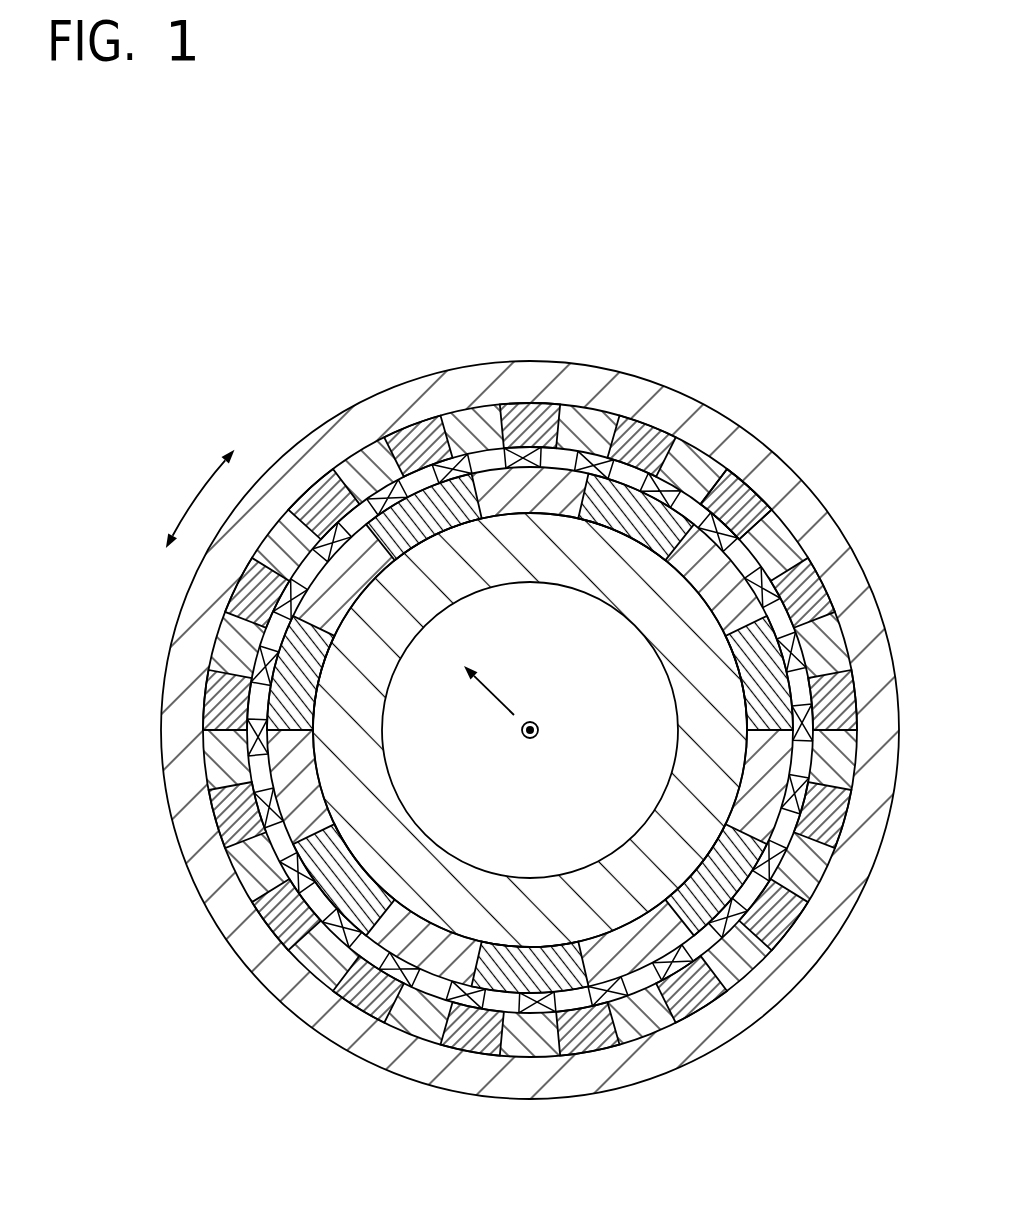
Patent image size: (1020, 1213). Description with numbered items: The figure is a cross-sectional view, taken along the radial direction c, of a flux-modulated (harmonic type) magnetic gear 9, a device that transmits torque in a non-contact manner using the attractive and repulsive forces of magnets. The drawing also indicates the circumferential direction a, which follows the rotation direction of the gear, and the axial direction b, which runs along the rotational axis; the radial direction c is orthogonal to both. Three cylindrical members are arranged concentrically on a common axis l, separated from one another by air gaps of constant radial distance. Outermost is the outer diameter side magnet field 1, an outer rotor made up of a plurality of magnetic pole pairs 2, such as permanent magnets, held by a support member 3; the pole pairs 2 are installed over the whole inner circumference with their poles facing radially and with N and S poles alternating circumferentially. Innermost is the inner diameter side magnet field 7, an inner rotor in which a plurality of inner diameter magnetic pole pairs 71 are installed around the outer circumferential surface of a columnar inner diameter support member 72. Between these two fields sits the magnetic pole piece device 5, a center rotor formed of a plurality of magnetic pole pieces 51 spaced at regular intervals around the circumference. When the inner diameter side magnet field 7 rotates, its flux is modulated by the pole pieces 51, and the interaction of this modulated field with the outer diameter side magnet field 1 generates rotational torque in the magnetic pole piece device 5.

The magnetic gear 9 is at (620, 263).
The outer diameter side magnet field 1 is at (435, 309).
The magnetic pole pairs 2 is at (523, 422).
The support member 3 is at (307, 467).
The magnetic pole piece device 5 is at (767, 540).
The magnetic pole pieces 51 is at (737, 502).
The inner diameter side magnet field 7 is at (107, 776).
The inner diameter magnetic pole pairs 71 is at (327, 877).
The inner diameter support member 72 is at (345, 745).
The circumferential direction a is at (197, 497).
The axial direction b is at (528, 723).
The radial direction c is at (489, 690).
The axis I is at (538, 731).